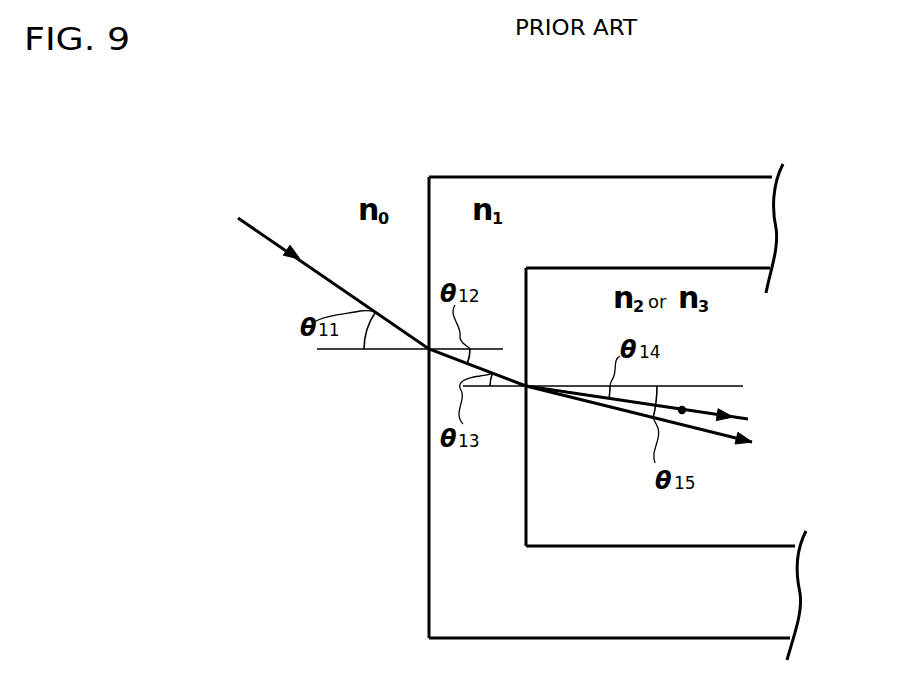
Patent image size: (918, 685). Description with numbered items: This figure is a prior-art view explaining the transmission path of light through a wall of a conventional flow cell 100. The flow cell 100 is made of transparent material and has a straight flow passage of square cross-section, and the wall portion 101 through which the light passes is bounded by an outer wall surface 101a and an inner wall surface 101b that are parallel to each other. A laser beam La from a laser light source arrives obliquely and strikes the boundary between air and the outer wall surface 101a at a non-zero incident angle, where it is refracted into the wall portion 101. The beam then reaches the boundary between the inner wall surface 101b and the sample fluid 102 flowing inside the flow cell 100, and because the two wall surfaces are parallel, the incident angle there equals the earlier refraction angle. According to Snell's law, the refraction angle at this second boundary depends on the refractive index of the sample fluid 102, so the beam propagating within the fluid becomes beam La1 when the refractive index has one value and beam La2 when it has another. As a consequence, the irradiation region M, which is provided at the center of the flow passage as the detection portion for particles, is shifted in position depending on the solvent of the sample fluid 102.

The flow cell 100 is at (613, 373).
The wall portion 101 is at (572, 374).
The outer wall surface 101a is at (429, 500).
The inner wall surface 101b is at (526, 494).
The sample fluid 102 is at (698, 407).
The laser beam La is at (263, 232).
The laser beam propagating within sample fluid of refractive index n2 La1 is at (744, 414).
The laser beam propagating within sample fluid of refractive index n3 La2 is at (749, 445).
The irradiation region M is at (682, 410).